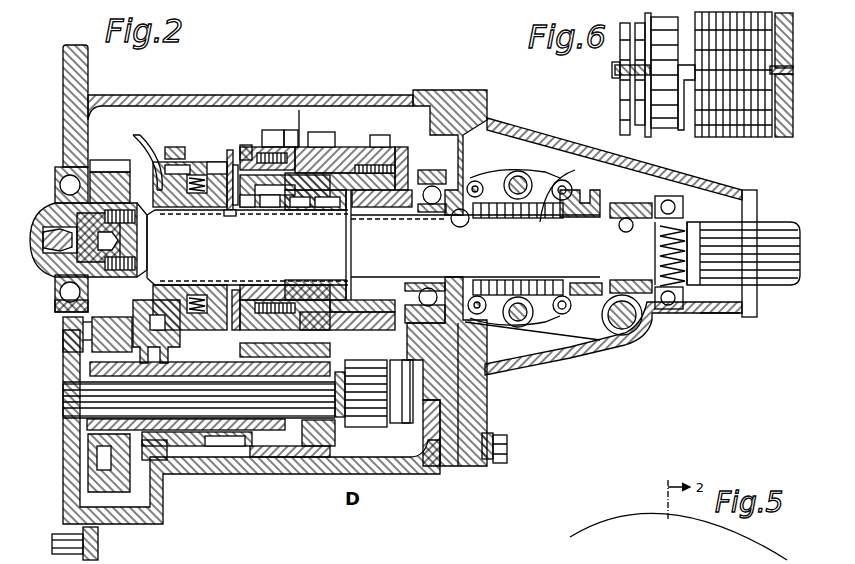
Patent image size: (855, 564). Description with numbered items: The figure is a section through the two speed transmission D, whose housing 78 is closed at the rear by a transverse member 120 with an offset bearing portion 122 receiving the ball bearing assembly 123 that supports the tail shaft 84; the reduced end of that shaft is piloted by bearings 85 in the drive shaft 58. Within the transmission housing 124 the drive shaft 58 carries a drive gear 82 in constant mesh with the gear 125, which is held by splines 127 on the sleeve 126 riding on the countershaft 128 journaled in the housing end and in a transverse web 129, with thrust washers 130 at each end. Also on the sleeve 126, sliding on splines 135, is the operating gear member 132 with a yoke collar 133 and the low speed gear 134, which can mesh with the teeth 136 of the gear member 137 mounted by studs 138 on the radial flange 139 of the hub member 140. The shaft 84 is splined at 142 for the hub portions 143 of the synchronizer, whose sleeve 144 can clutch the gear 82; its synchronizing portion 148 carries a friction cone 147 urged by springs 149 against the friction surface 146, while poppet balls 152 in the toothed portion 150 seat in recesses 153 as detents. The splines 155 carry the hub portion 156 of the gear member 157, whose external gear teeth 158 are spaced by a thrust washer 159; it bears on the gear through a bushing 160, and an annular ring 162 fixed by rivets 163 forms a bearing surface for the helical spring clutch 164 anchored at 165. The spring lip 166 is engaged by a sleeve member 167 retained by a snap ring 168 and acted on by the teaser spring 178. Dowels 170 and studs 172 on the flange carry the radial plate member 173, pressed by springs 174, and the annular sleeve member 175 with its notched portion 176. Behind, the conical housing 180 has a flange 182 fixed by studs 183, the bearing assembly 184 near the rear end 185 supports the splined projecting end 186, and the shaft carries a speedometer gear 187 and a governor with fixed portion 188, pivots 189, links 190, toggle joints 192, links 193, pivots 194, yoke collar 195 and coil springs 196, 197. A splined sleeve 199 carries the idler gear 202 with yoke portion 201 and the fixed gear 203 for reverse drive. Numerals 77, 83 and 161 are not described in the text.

In FIG. 2, the housing 78 is at (63, 53).
In FIG. 2, the transmission housing 124 is at (126, 96).
In FIG. 2, the transverse member 120 is at (450, 467).
In FIG. 2, the thrust washers 130 is at (68, 443).
In FIG. 2, the gear 125 is at (63, 342).
In FIG. 2, the ball bearing 77 is at (60, 186).
In FIG. 2, the drive shaft 58 is at (55, 280).
In FIG. 2, the drive gear 82 is at (55, 306).
In FIG. 2, the bearings 85 is at (98, 237).
In FIG. 2, the bolt 83 is at (97, 245).
In FIG. 2, the splines 142 is at (136, 218).
In FIG. 2, the tail shaft 84 is at (170, 240).
In FIG. 2, the splines 155 is at (349, 215).
In FIG. 2, the hub portion 156 is at (398, 216).
In FIG. 2, the friction surface 146 is at (112, 172).
In FIG. 2, the friction cone 147 is at (140, 150).
In FIG. 2, the synchronizing portion 148 is at (152, 160).
In FIG. 2, the recesses 153 is at (176, 147).
In FIG. 2, the springs 149 is at (168, 162).
In FIG. 2, the splined hub portions 143 is at (193, 285).
In FIG. 2, the toothed portion 150 is at (200, 170).
In FIG. 2, the synchronizing sleeve 144 is at (215, 165).
In FIG. 2, the springs 174 is at (231, 150).
In FIG. 2, the radial plate member 173 is at (229, 162).
In FIG. 6, the radial plate member 173 is at (622, 105).
In FIG. 2, the studs 172 is at (249, 147).
In FIG. 6, the studs 172 is at (618, 74).
In FIG. 2, the gear member 137 is at (300, 165).
In FIG. 2, the studs 138 is at (275, 130).
In FIG. 2, the teeth 136 is at (291, 130).
In FIG. 2, the thrust washer 159 is at (299, 110).
In FIG. 2, the external gear teeth 158 is at (318, 147).
In FIG. 2, the bushing 160 is at (325, 140).
In FIG. 2, the annular ring 162 is at (372, 165).
In FIG. 2, the rivets 163 is at (380, 147).
In FIG. 2, the gear member 157 is at (400, 147).
In FIG. 6, the gear member 157 is at (793, 112).
In FIG. 2, the anchor 165 is at (425, 170).
In FIG. 6, the anchor 165 is at (793, 70).
In FIG. 2, the radial flange 139 is at (229, 214).
In FIG. 6, the radial flange 139 is at (638, 118).
In FIG. 2, the annular sleeve member 175 is at (250, 208).
In FIG. 6, the annular sleeve member 175 is at (649, 137).
In FIG. 2, the lip 166 is at (272, 208).
In FIG. 6, the lip 166 is at (690, 128).
In FIG. 2, the clutch plate 161 is at (300, 208).
In FIG. 2, the hub member 140 is at (320, 208).
In FIG. 2, the dowels 170 is at (204, 292).
In FIG. 2, the snap ring 168 is at (251, 287).
In FIG. 2, the teaser spring 178 is at (268, 290).
In FIG. 2, the sleeve member 167 is at (305, 300).
In FIG. 2, the ball bearing assembly 123 is at (426, 288).
In FIG. 2, the poppet balls 152 is at (186, 332).
In FIG. 2, the fixed gear 203 is at (199, 400).
In FIG. 2, the splines 127 is at (63, 386).
In FIG. 2, the sleeve 126 is at (63, 402).
In FIG. 2, the countershaft 128 is at (87, 422).
In FIG. 2, the yoke collar 133 is at (160, 462).
In FIG. 2, the operating gear member 132 is at (196, 447).
In FIG. 2, the low speed gear 134 is at (225, 447).
In FIG. 2, the splines 135 is at (260, 458).
In FIG. 2, the transverse web 129 is at (318, 447).
In FIG. 2, the splined sleeve 199 is at (362, 428).
In FIG. 2, the idler gear 202 is at (380, 430).
In FIG. 2, the yoke portion 201 is at (398, 424).
In FIG. 2, the flange 182 is at (487, 460).
In FIG. 2, the studs 183 is at (503, 463).
In FIG. 2, the conical housing 180 is at (604, 353).
In FIG. 2, the rear end 185 is at (700, 318).
In FIG. 2, the fixed portion 188 is at (478, 181).
In FIG. 2, the links 190 is at (518, 171).
In FIG. 2, the coil spring 197 is at (568, 183).
In FIG. 2, the coil spring 196 is at (548, 185).
In FIG. 2, the yoke collar 195 is at (595, 192).
In FIG. 2, the speedometer gear 187 is at (630, 203).
In FIG. 2, the pivots 189 is at (482, 313).
In FIG. 2, the offset bearing portion 122 is at (452, 330).
In FIG. 2, the toggle joints 192 is at (520, 328).
In FIG. 2, the links 193 is at (560, 316).
In FIG. 2, the pivots 194 is at (604, 322).
In FIG. 2, the bearing assembly 184 is at (668, 310).
In FIG. 2, the projecting end 186 is at (760, 224).
In FIG. 6, the notched portion 176 is at (670, 128).
In FIG. 6, the helical spring clutch 164 is at (740, 137).